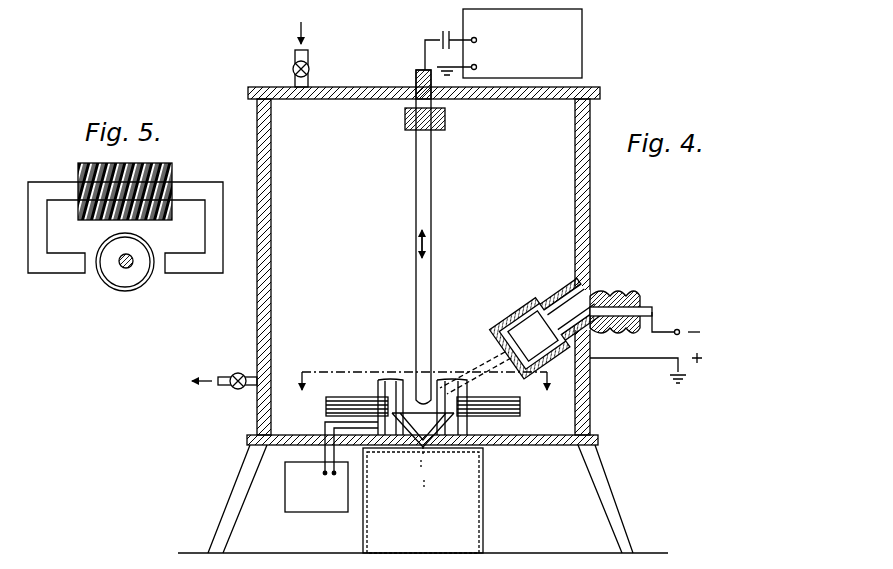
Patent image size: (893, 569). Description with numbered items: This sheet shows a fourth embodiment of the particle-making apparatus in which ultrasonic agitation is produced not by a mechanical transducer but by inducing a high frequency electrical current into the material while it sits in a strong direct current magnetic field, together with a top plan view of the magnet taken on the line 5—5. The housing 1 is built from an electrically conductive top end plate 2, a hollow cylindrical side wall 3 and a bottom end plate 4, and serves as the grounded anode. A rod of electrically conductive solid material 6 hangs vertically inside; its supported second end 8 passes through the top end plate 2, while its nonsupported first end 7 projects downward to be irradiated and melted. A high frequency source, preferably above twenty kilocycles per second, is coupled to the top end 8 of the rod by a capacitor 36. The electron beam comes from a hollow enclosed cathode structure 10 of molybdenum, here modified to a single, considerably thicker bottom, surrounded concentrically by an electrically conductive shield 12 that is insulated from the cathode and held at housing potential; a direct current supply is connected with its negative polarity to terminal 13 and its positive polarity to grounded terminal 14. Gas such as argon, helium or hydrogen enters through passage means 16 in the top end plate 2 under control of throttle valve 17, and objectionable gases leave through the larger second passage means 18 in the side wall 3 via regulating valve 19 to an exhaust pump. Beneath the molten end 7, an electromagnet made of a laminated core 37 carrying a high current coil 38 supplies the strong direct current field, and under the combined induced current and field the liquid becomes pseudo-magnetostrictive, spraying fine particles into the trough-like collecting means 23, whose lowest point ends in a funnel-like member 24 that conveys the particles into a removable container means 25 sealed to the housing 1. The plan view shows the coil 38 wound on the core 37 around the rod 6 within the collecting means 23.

In FIG. 4, the housing 1 is at (611, 181).
In FIG. 4, the top end plate 2 is at (594, 90).
In FIG. 4, the hollow cylindrical side wall 3 is at (588, 227).
In FIG. 4, the bottom end plate 4 is at (600, 440).
In FIG. 4, the line 5— 5 is at (417, 393).
In FIG. 4, the solid material 6 is at (432, 245).
In FIG. 5, the solid material 6 is at (120, 268).
In FIG. 4, the first end 7 is at (420, 392).
In FIG. 4, the second end 8 is at (432, 138).
In FIG. 4, the hollow enclosed cathode structure 10 is at (499, 337).
In FIG. 4, the electrically conductive shield 12 is at (520, 308).
In FIG. 4, the terminal 13 is at (680, 328).
In FIG. 4, the grounded terminal 14 is at (690, 366).
In FIG. 4, the passage means 16 is at (309, 84).
In FIG. 4, the throttle valve 17 is at (292, 67).
In FIG. 4, the second passage means 18 is at (248, 388).
In FIG. 4, the regulating valve 19 is at (236, 372).
In FIG. 4, the collecting means 23 is at (456, 446).
In FIG. 5, the collecting means 23 is at (130, 290).
In FIG. 4, the funnel-like member 24 is at (424, 448).
In FIG. 4, the container means 25 is at (486, 493).
In FIG. 4, the capacitor 36 is at (441, 35).
In FIG. 4, the laminated core 37 is at (519, 411).
In FIG. 5, the laminated core 37 is at (200, 265).
In FIG. 4, the high current coil 38 is at (378, 386).
In FIG. 5, the high current coil 38 is at (168, 172).